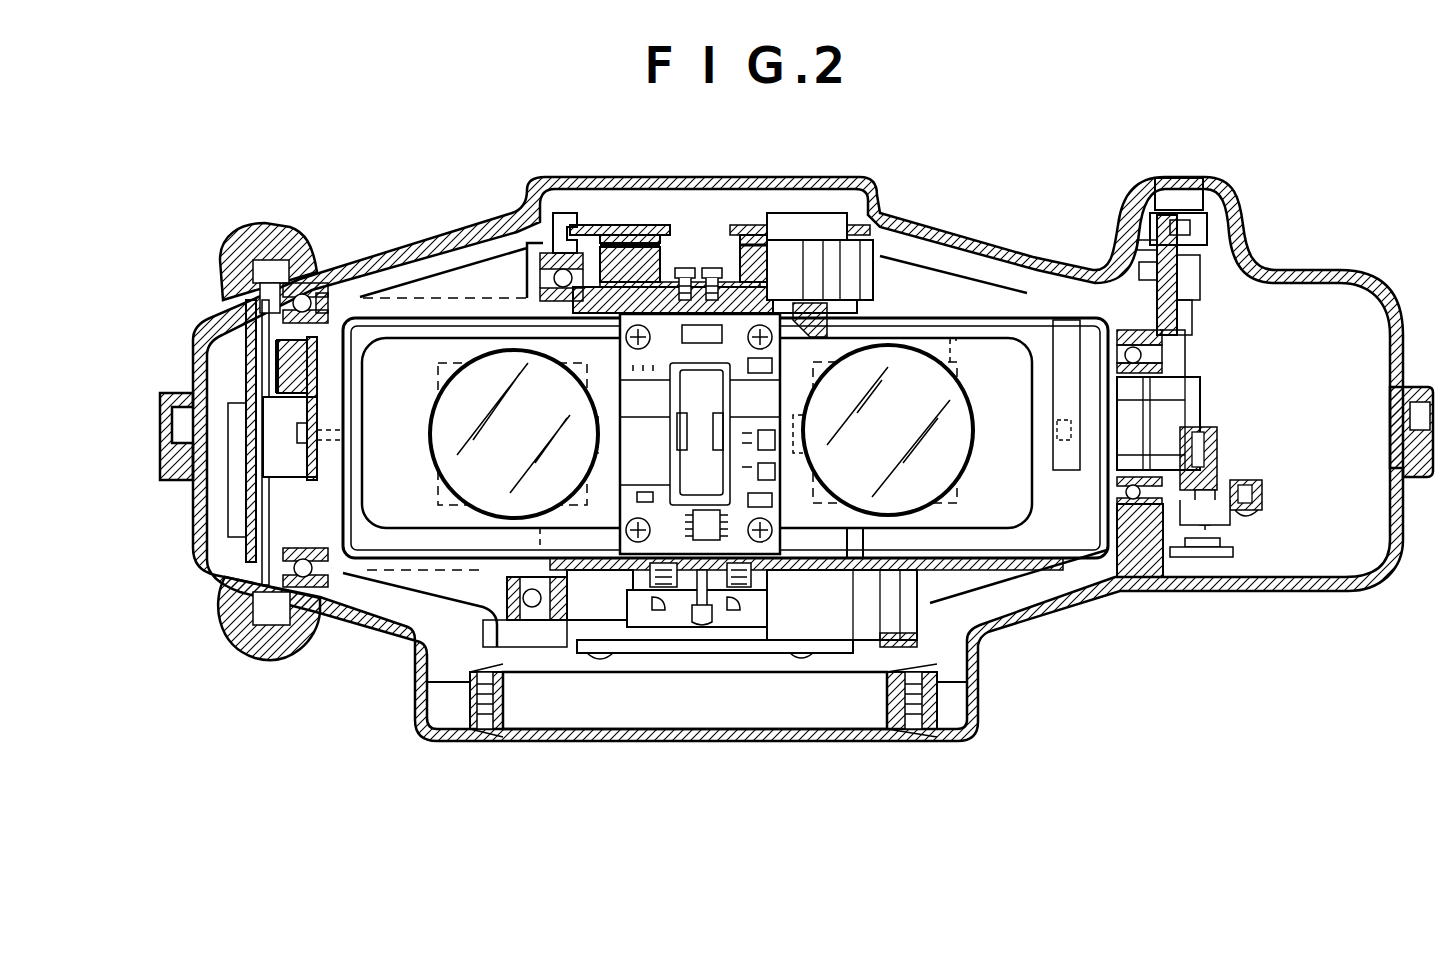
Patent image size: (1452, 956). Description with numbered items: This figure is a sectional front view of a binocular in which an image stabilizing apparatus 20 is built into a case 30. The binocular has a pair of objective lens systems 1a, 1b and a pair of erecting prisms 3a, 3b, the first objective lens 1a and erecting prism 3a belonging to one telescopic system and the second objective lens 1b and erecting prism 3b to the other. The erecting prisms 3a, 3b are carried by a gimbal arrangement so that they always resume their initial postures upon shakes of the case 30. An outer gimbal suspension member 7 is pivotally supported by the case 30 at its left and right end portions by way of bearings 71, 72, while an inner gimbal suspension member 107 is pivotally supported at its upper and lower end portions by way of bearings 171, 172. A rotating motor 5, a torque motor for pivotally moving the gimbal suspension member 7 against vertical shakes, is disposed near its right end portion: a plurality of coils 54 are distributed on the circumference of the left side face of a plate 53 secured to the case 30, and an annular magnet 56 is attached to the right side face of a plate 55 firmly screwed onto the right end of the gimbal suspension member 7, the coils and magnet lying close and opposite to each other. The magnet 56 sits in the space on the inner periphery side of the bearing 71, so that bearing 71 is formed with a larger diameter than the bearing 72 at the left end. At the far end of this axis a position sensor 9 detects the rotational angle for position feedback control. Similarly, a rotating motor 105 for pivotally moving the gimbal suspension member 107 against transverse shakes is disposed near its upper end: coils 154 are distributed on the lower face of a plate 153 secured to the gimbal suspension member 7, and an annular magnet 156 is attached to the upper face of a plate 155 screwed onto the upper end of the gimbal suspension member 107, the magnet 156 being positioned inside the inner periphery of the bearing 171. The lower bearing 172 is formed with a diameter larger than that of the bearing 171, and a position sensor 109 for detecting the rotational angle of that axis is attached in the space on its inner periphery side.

The objective lens system 1a is at (433, 457).
The objective lens system 1b is at (973, 447).
The erecting prism 3a is at (440, 327).
The erecting prism 3b is at (953, 363).
The rotating motor 5 is at (237, 473).
The gimbal suspension member 7 is at (923, 303).
The position sensor 9 is at (1233, 527).
The image stabilizing apparatus 20 is at (627, 213).
The case 30 is at (1317, 270).
The plate 53 is at (195, 307).
The coils 54 is at (246, 367).
The plate 55 is at (317, 413).
The annular magnet 56 is at (310, 367).
The bearing 71 is at (345, 265).
The bearing 72 is at (1162, 345).
The rotating motor 105 is at (700, 232).
The gimbal suspension member 107 is at (1013, 337).
The position sensor 109 is at (660, 613).
The plate 153 is at (660, 235).
The coils 154 is at (672, 285).
The plate 155 is at (745, 250).
The annular magnet 156 is at (605, 247).
The bearing 171 is at (530, 220).
The bearing 172 is at (413, 632).